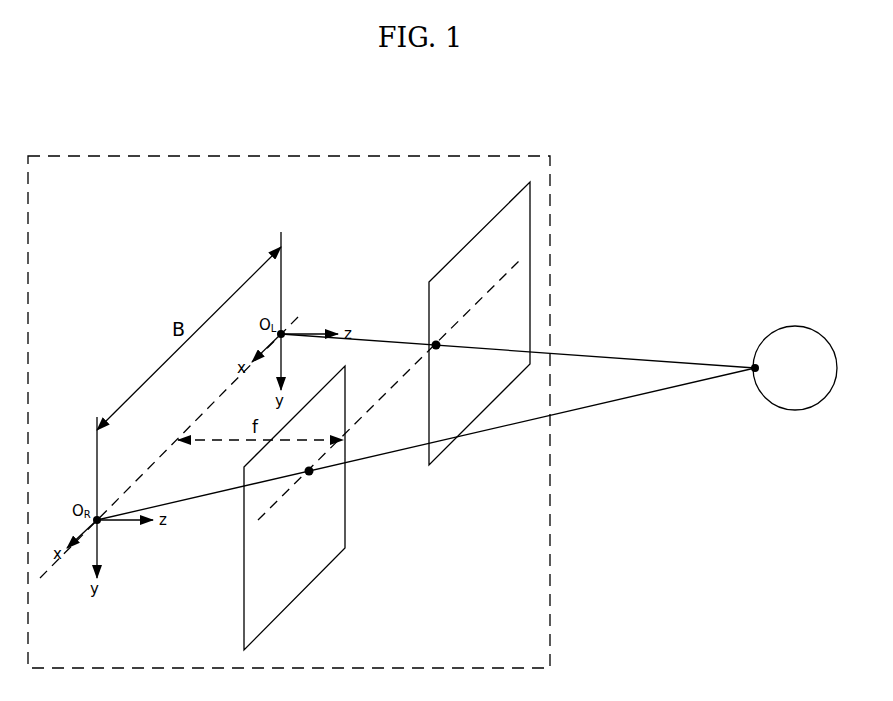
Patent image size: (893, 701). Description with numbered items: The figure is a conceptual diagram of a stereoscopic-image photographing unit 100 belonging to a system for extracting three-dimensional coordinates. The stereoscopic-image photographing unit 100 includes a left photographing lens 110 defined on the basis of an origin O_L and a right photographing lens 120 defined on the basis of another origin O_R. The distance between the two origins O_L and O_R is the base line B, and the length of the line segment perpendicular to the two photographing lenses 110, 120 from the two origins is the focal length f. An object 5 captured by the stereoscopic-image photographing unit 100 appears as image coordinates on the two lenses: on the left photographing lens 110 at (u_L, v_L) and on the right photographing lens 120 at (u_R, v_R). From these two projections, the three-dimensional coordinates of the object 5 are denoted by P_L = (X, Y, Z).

The stereoscopic-image photographing unit 100 is at (304, 156).
The left photographing lens 110 is at (447, 264).
The right photographing lens 120 is at (345, 536).
The object 5 is at (791, 327).